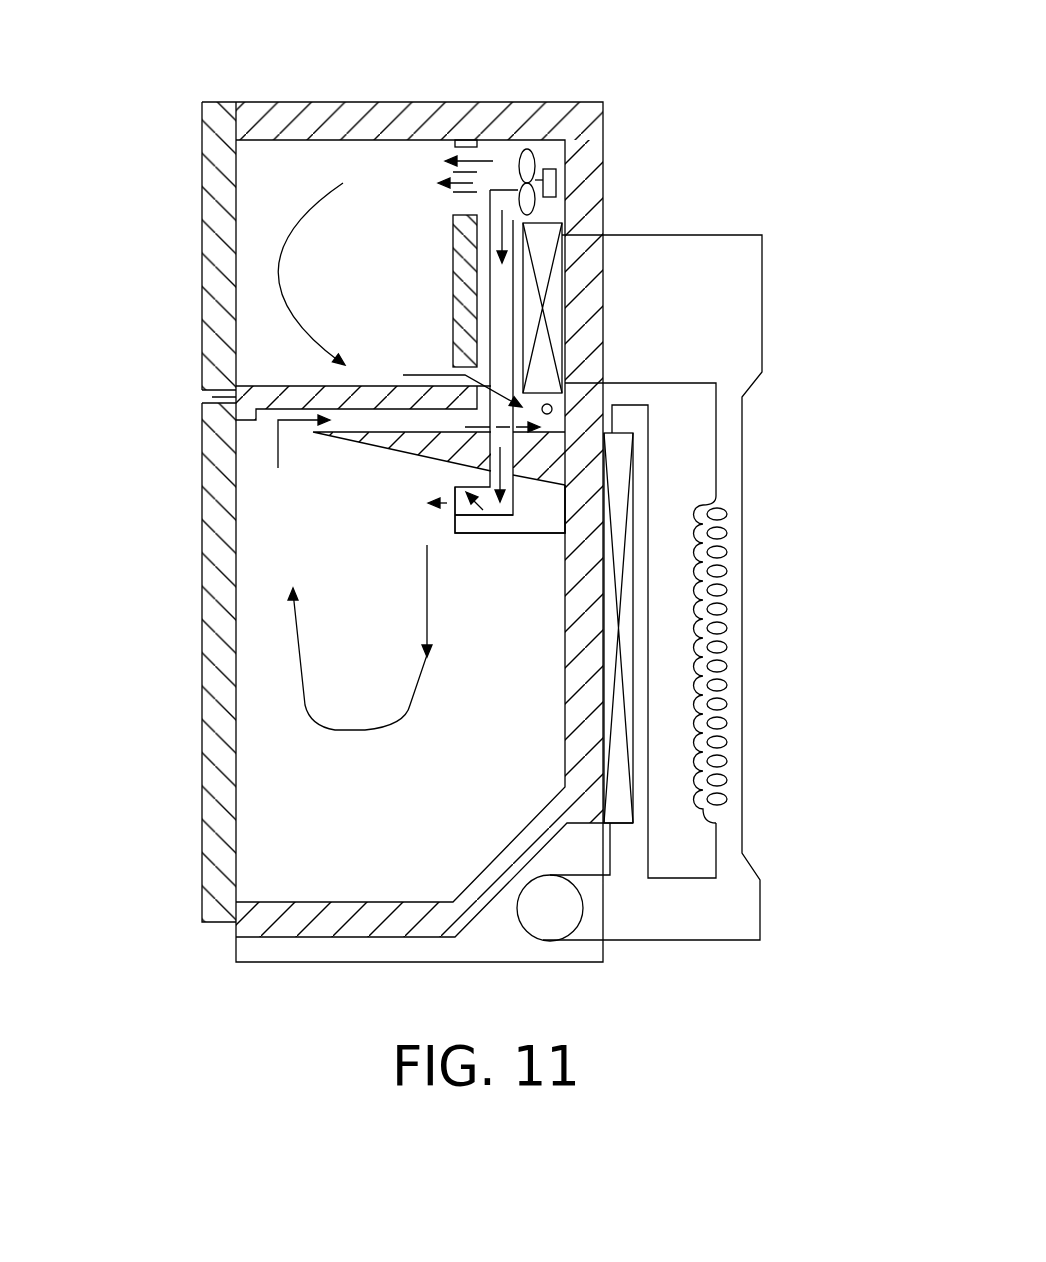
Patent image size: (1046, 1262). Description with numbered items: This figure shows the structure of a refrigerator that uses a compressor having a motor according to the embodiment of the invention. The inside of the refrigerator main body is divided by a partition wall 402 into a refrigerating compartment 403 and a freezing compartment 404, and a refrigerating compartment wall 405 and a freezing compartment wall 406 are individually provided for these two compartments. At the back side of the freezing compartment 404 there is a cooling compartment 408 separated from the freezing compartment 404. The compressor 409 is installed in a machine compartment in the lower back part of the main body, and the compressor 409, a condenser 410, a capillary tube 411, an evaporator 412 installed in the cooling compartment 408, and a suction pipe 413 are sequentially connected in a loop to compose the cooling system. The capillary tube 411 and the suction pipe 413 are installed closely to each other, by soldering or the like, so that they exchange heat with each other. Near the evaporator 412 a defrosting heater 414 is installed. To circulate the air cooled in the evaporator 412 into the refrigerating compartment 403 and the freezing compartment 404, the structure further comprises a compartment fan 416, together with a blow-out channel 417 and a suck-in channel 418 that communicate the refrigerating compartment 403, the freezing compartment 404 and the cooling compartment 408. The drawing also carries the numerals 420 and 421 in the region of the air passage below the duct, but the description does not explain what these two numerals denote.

The partition wall 402 is at (202, 397).
The refrigerating compartment 403 is at (258, 730).
The freezing compartment 404 is at (303, 288).
The refrigerating compartment wall 405 is at (202, 599).
The freezing compartment wall 406 is at (202, 199).
The cooling compartment 408 is at (505, 237).
The compressor 409 is at (585, 905).
The condenser 410 is at (637, 493).
The capillary tube 411 is at (383, 100).
The evaporator 412 is at (563, 285).
The suction pipe 413 is at (745, 583).
The defrosting heater 414 is at (553, 407).
The compartment fan 416 is at (550, 157).
The blow-out channel 417 is at (497, 182).
The suck-in channel 418 is at (380, 452).
The air passage housing 420 is at (453, 480).
The air outlet to refrigerating compartment 421 is at (453, 518).